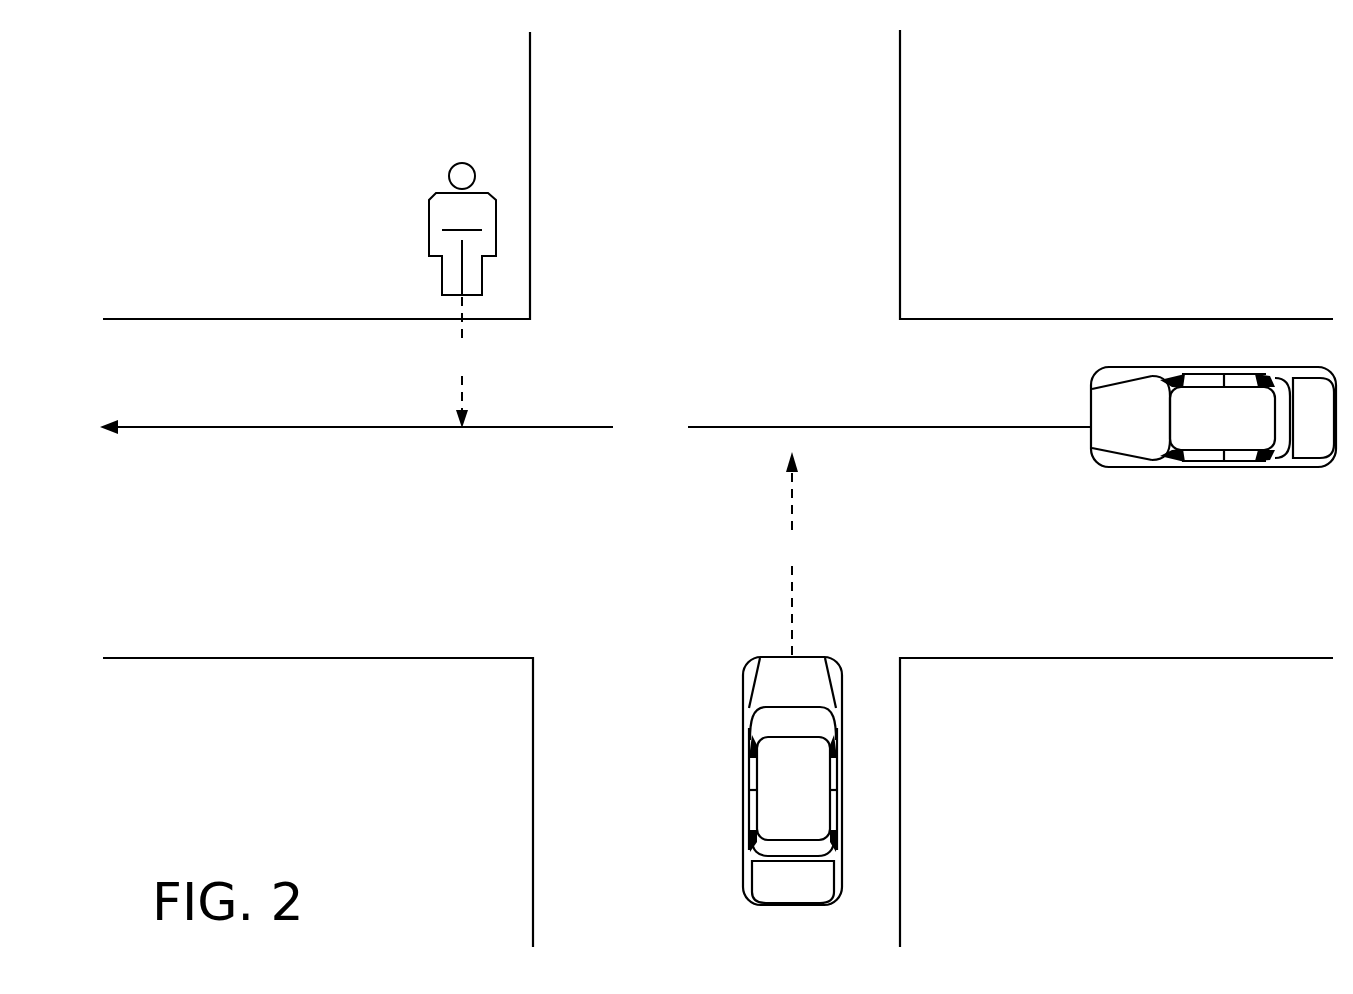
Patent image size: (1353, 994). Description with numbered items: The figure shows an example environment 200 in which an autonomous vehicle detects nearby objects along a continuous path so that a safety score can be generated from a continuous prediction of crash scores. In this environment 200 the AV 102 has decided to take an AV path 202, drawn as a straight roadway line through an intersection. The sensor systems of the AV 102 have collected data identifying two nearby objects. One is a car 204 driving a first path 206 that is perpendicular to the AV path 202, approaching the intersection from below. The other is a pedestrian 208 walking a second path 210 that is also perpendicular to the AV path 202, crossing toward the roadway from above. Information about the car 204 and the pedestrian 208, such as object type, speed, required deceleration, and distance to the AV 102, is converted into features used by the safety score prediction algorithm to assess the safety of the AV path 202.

The environment 200 is at (160, 88).
The AV 102 is at (1238, 429).
The AV path 202 is at (595, 427).
The car 204 is at (809, 801).
The first path 206 is at (795, 553).
The pedestrian 208 is at (478, 230).
The second path 210 is at (465, 362).